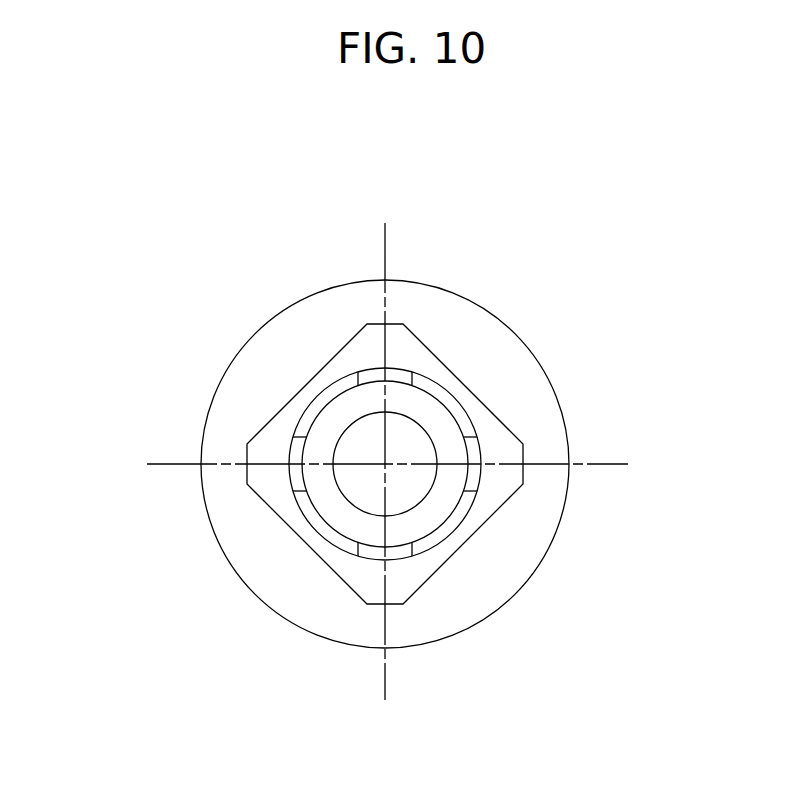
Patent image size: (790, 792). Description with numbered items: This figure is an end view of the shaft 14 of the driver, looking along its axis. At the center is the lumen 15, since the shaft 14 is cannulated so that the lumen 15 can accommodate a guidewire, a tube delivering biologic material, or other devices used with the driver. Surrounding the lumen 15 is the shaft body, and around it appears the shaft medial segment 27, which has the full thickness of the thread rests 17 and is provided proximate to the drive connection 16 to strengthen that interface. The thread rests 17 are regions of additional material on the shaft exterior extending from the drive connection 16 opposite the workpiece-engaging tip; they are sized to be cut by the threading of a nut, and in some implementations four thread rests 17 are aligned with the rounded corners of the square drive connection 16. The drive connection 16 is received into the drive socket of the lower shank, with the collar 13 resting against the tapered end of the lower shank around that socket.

The collar 13 is at (493, 610).
The shaft 14 is at (125, 542).
The lumen 15 is at (372, 478).
The drive connection 16 is at (495, 487).
The thread rests 17 is at (475, 450).
The shaft medial segment 27 is at (445, 397).